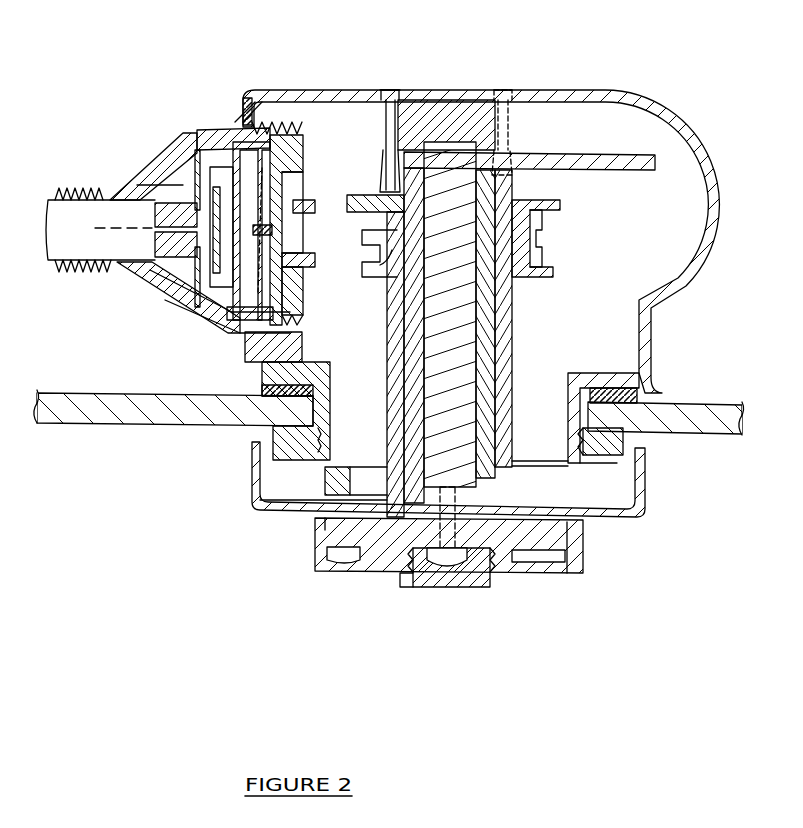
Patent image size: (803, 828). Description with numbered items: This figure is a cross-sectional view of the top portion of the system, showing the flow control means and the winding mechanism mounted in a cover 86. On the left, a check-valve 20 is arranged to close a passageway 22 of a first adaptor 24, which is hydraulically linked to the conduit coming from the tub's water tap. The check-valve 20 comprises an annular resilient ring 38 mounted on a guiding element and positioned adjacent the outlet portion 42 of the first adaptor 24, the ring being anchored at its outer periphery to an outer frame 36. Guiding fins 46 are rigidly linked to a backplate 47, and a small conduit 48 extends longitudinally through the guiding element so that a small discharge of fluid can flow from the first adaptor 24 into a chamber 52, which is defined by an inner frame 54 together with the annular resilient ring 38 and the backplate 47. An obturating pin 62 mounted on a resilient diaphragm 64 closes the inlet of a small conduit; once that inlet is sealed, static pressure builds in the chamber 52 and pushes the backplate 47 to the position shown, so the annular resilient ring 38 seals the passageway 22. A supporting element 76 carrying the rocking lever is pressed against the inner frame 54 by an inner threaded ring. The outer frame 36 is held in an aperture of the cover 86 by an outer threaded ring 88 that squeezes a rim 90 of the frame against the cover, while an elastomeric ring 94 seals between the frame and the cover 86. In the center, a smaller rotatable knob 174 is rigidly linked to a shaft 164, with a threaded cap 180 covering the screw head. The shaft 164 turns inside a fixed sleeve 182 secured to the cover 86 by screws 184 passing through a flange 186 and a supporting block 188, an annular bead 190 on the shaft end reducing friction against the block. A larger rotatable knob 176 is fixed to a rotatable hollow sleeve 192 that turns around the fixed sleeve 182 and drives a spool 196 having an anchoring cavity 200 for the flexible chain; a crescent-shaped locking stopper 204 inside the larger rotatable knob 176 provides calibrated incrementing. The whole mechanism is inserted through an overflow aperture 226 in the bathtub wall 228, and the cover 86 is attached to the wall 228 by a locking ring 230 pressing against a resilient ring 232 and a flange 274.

The check-valve 20 is at (106, 217).
The passageway 22 is at (137, 283).
The first adaptor 24 is at (52, 257).
The outer frame 36 is at (163, 305).
The annular resilient ring 38 is at (196, 191).
The outlet portion 42 is at (147, 197).
The guiding fins 46 is at (160, 209).
The backplate 47 is at (230, 217).
The small conduit 48 is at (158, 239).
The chamber 52 is at (256, 279).
The inner frame 54 is at (217, 147).
The obturating pin 62 is at (287, 223).
The resilient diaphragm 64 is at (236, 183).
The supporting element 76 is at (302, 251).
The cover 86 is at (302, 90).
The outer threaded ring 88 is at (297, 120).
The rim 90 is at (241, 106).
The elastomeric ring 94 is at (245, 93).
The shaft 164 is at (470, 347).
The smaller rotatable knob 174 is at (565, 575).
The larger rotatable knob 176 is at (268, 509).
The threaded cap 180 is at (410, 583).
The fixed sleeve 182 is at (487, 325).
The screws 184 is at (386, 151).
The flange 186 is at (385, 192).
The supporting block 188 is at (428, 96).
The annular bead 190 is at (462, 146).
The rotatable hollow sleeve 192 is at (393, 396).
The spool 196 is at (545, 270).
The anchoring cavity 200 is at (388, 268).
The locking stopper 204 is at (327, 482).
The overflow aperture 226 is at (330, 407).
The wall 228 is at (143, 413).
The locking ring 230 is at (625, 443).
The resilient ring 232 is at (263, 393).
The flange 274 is at (607, 375).